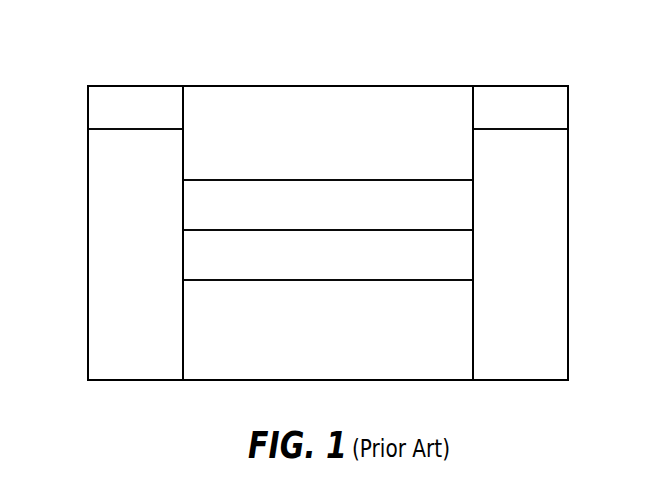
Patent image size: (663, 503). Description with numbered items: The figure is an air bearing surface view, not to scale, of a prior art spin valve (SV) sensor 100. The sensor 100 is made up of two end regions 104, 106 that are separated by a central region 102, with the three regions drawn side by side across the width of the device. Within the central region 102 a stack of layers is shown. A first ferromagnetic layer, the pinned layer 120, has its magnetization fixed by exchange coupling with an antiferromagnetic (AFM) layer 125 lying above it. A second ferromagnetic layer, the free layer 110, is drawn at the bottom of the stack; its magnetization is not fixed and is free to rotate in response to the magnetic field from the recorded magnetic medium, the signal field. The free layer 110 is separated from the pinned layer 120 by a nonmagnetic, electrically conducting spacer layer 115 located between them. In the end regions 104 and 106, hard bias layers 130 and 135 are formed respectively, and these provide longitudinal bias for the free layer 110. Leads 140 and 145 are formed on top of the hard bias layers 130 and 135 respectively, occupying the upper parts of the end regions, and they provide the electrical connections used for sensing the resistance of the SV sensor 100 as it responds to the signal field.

The SV sensor 100 is at (552, 417).
The central region 102 is at (472, 60).
The end region 104 is at (182, 60).
The end region 106 is at (567, 60).
The free layer 110 is at (468, 337).
The spacer layer 115 is at (468, 262).
The pinned layer 120 is at (468, 214).
The antiferromagnetic (AFM) layer 125 is at (468, 157).
The hard bias layer 130 is at (92, 174).
The hard bias layer 135 is at (560, 232).
The lead 140 is at (93, 108).
The lead 145 is at (560, 108).